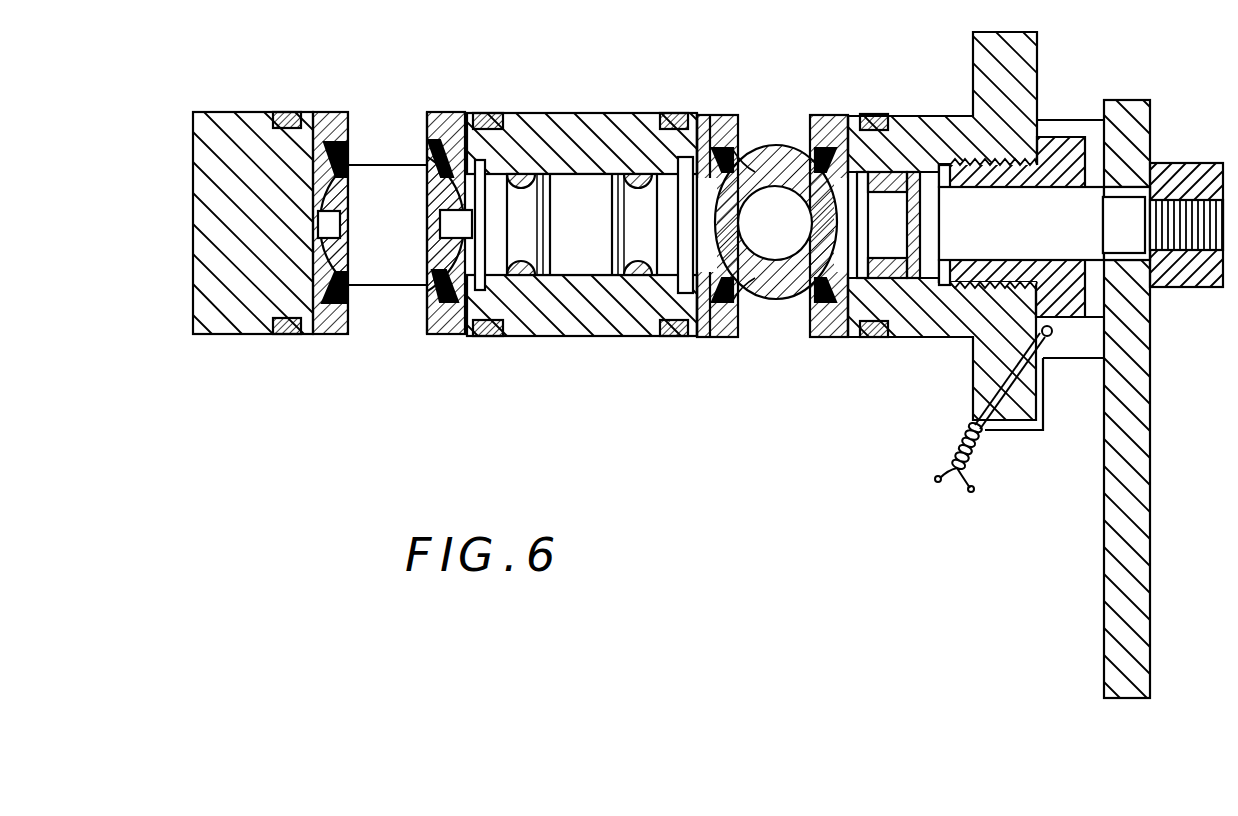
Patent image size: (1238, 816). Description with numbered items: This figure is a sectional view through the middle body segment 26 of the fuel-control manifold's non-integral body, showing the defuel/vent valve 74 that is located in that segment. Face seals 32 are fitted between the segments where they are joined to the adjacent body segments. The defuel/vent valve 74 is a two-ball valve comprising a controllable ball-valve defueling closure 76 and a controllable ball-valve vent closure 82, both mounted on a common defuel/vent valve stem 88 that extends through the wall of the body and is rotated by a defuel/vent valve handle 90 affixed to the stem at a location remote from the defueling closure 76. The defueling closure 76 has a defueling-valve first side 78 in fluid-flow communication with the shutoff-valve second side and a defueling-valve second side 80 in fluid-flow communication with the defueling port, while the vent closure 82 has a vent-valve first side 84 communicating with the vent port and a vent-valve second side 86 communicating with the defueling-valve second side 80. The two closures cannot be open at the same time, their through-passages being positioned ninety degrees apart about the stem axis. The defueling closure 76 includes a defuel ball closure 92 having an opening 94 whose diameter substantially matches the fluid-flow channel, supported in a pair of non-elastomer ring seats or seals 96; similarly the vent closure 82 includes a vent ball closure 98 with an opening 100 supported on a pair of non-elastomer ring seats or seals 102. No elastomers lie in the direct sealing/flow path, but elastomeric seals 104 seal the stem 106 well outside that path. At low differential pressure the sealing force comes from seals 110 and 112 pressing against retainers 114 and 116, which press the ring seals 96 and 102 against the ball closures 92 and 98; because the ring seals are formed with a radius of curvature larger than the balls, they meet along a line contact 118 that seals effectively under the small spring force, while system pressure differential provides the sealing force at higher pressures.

The middle body segment 26 is at (193, 120).
The face seals 32 is at (290, 112).
The defuel/vent valve 74 is at (1166, 306).
The ball-valve defueling closure 76 is at (306, 192).
The defueling-valve first side 78 is at (340, 112).
The defueling-valve second side 80 is at (343, 338).
The ball-valve vent closure 82 is at (790, 340).
The vent-valve first side 84 is at (725, 115).
The vent-valve second side 86 is at (720, 338).
The defuel/vent valve stem 88 is at (885, 205).
The defuel/vent valve handle 90 is at (1104, 538).
The defuel ball closure 92 is at (328, 248).
The opening 94 is at (350, 192).
The ring seats or seals 96 is at (430, 300).
The vent ball closure 98 is at (790, 138).
The opening 100 is at (780, 258).
The ring seats or seals 102 is at (748, 148).
The elastomeric seals 104 is at (535, 338).
The stem 106 is at (1060, 195).
The seals 110 is at (467, 338).
The seals 112 is at (445, 112).
The retainers 114 is at (432, 338).
The retainers 116 is at (428, 128).
The line contact 118 is at (430, 260).